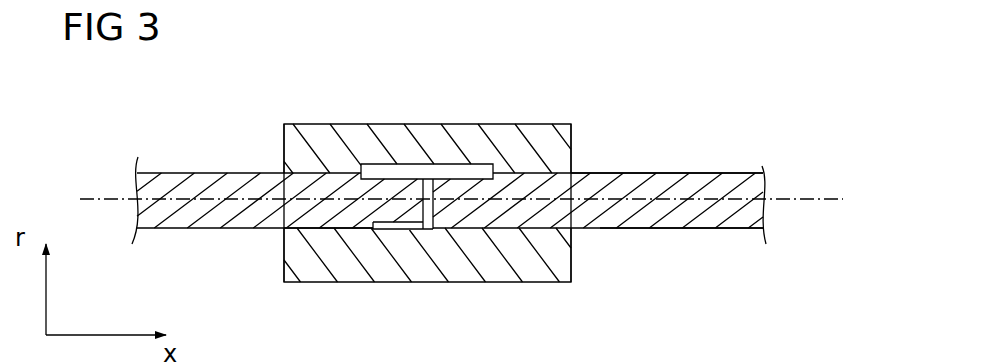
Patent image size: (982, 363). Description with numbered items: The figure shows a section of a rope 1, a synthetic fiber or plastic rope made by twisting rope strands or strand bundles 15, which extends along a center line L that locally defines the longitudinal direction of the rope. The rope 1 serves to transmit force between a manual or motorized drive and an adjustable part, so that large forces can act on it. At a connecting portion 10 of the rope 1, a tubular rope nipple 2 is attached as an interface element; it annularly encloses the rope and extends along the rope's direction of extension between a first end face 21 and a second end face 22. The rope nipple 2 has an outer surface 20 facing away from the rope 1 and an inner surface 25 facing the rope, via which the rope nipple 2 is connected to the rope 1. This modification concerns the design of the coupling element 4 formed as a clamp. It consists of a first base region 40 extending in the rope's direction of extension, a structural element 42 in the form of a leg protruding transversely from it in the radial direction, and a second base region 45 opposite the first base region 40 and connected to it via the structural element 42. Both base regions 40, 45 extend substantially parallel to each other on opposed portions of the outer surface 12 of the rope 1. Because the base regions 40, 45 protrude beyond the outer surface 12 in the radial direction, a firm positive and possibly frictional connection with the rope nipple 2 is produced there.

The rope 1 is at (449, 218).
The rope nipple 2 is at (424, 179).
The coupling element 4 is at (436, 203).
The connecting portion 10 is at (343, 188).
The outer surface 12 is at (716, 230).
The strand bundles 15 is at (658, 193).
The outer surface 20 is at (333, 123).
The first end face 21 is at (284, 151).
The second end face 22 is at (573, 152).
The inner surface 25 is at (296, 216).
The first base region 40 is at (400, 165).
The structural element 42 is at (433, 229).
The second base region 45 is at (388, 229).
The center line L is at (797, 198).